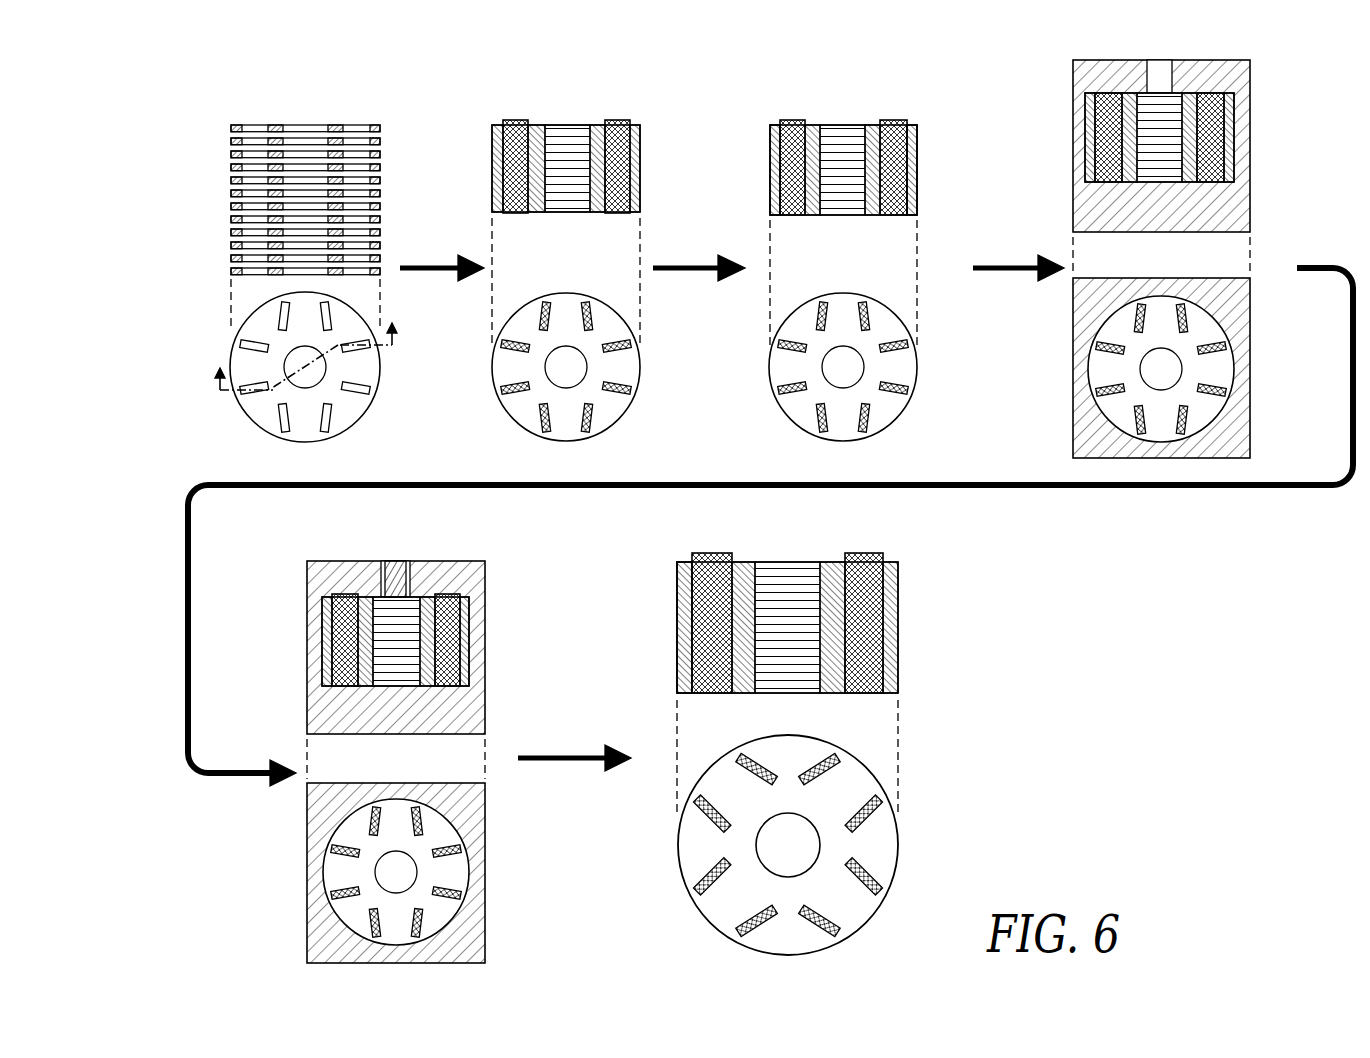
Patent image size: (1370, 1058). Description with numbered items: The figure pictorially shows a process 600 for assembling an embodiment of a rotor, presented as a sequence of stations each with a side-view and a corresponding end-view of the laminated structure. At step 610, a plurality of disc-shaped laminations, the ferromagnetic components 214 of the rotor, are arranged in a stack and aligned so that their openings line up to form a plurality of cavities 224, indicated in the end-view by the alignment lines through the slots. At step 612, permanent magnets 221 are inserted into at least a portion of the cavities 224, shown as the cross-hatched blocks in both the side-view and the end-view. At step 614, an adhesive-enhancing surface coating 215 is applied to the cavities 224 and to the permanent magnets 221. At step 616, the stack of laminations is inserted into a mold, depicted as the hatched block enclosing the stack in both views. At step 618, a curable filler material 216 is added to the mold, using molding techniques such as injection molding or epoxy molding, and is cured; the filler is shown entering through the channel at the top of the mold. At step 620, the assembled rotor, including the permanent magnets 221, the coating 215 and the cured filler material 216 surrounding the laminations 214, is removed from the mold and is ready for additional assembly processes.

The process 600 is at (205, 103).
The step 610 is at (215, 165).
The step 612 is at (478, 158).
The step 614 is at (745, 130).
The step 616 is at (1060, 113).
The step 618 is at (292, 610).
The step 620 is at (650, 618).
The ferromagnetic components 214 is at (705, 766).
The adhesive-enhancing surface coating 215 is at (912, 178).
The curable filler material 216 is at (397, 595).
The permanent magnets 221 is at (625, 178).
The cavities 224 is at (357, 350).